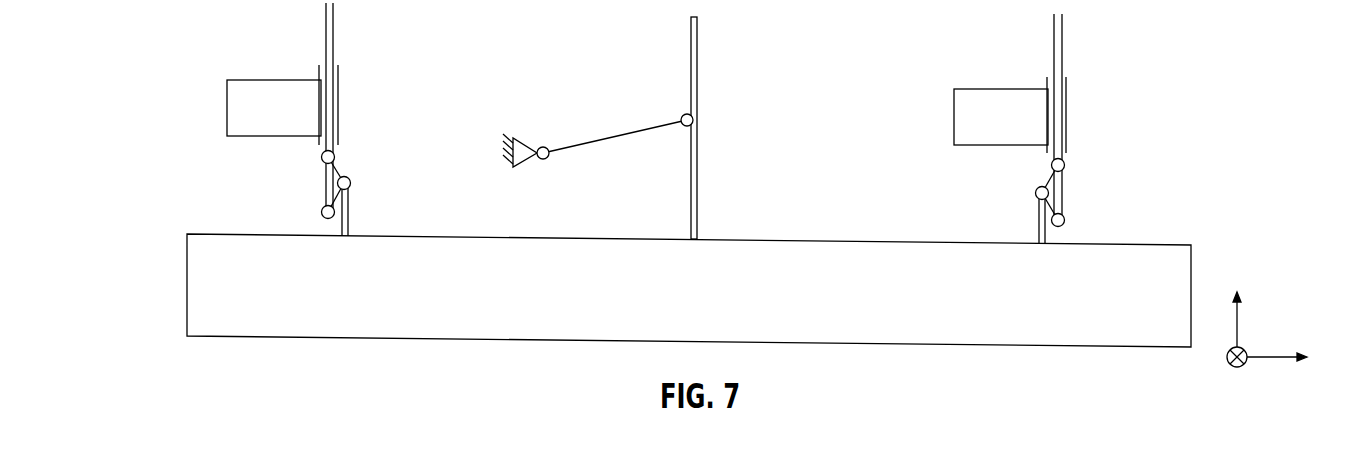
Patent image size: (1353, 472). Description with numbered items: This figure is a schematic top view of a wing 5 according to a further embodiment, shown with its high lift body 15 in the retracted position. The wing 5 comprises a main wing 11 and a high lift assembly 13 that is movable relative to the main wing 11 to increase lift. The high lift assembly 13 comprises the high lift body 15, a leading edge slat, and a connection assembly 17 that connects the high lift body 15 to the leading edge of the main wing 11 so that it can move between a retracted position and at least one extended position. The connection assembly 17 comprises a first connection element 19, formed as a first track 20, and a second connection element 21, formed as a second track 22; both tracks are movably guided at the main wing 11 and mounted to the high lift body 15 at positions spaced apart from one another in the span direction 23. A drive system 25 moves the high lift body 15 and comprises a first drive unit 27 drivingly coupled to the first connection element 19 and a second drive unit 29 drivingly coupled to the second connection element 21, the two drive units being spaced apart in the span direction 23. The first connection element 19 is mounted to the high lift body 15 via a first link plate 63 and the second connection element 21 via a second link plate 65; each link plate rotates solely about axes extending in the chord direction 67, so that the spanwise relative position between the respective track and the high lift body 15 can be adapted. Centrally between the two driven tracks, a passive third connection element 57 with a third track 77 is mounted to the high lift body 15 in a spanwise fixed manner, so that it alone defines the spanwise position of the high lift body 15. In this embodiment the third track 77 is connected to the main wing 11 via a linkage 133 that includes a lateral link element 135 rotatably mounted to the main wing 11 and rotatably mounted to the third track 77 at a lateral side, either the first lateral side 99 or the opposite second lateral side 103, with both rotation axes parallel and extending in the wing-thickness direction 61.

The wing 5 is at (108, 114).
The main wing 11 is at (827, 142).
The high lift assembly 13 is at (1243, 228).
The high lift body 15 is at (807, 298).
The connection assembly 17 is at (1243, 138).
The first connection element 19 is at (1107, 117).
The first track 20 is at (1062, 53).
The second connection element 21 is at (378, 107).
The second track 22 is at (327, 35).
The span direction 23 is at (1283, 352).
The drive system 25 is at (620, 86).
The first drive unit 27 is at (985, 100).
The second drive unit 29 is at (243, 92).
The third connection element 57 is at (746, 128).
The wing-thickness direction 61 is at (1235, 368).
The first link plate 63 is at (1047, 180).
The second link plate 65 is at (336, 171).
The chord direction 67 is at (1238, 327).
The third track 77 is at (695, 43).
The first lateral side 99 is at (1160, 115).
The second lateral side 103 is at (238, 192).
The linkage 133 is at (598, 120).
The lateral link element 135 is at (608, 142).